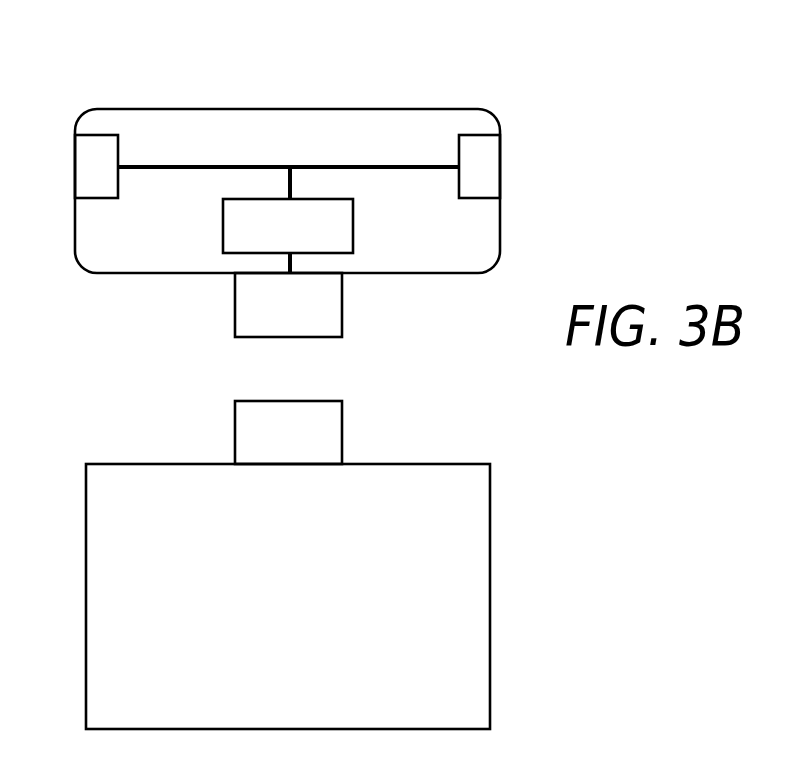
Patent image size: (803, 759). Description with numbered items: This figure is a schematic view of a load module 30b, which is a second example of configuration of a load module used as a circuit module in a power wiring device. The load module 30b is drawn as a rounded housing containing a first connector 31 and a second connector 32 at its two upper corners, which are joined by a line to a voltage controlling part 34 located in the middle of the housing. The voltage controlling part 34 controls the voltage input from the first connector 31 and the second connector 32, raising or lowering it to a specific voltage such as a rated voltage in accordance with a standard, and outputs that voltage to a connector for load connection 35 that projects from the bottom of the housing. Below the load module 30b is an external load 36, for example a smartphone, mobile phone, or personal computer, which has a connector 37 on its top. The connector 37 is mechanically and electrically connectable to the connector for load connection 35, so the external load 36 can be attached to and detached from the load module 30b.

The load module 30b is at (360, 109).
The first connector 31 is at (88, 131).
The second connector 32 is at (482, 130).
The voltage controlling part 34 is at (353, 225).
The connector for load connection 35 is at (342, 303).
The external load 36 is at (460, 464).
The connector 37 is at (342, 430).